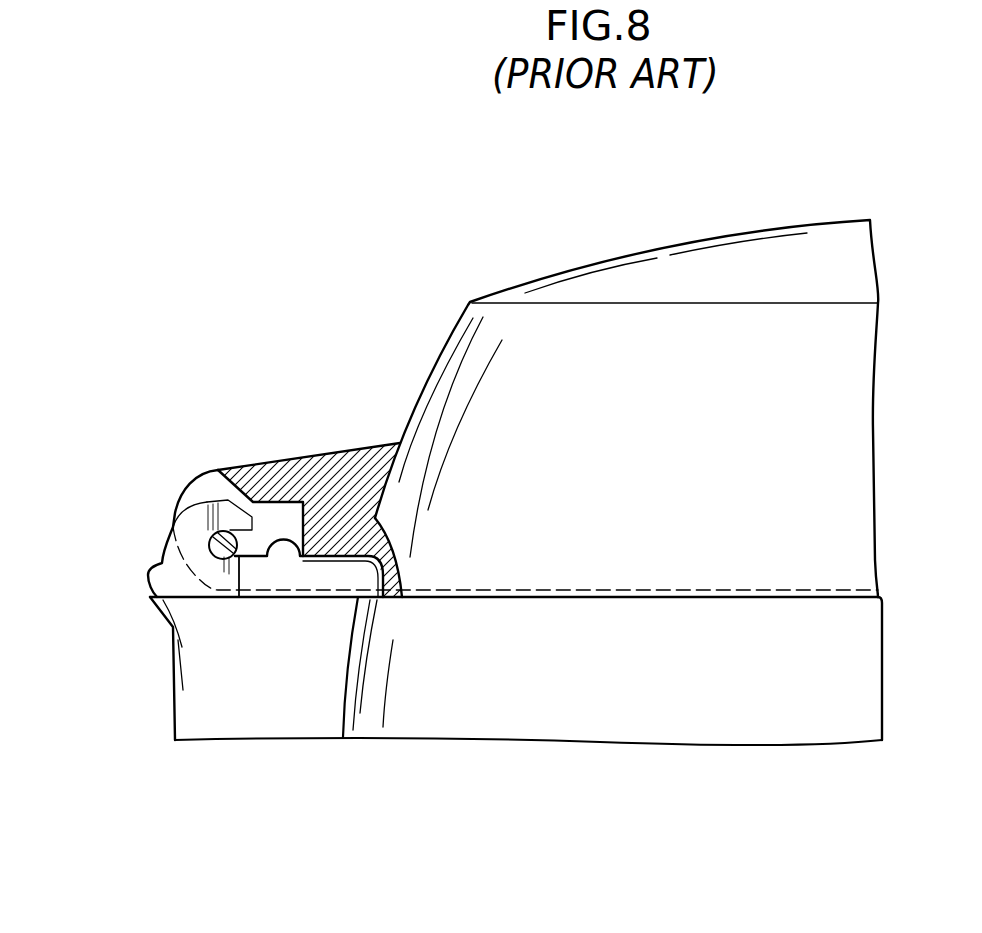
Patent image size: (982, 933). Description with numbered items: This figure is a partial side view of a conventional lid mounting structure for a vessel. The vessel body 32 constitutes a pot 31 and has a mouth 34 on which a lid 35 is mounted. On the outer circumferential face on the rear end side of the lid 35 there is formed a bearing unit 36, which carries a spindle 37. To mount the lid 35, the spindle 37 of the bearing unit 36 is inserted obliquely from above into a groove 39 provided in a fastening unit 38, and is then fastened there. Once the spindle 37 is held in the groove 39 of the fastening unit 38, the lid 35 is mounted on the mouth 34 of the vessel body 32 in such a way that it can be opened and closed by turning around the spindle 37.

The pot 31 is at (400, 308).
The vessel body 32 is at (537, 712).
The mouth 34 is at (207, 657).
The lid 35 is at (440, 433).
The bearing unit 36 is at (262, 478).
The spindle 37 is at (208, 542).
The fastening unit 38 is at (195, 570).
The groove 39 is at (240, 558).